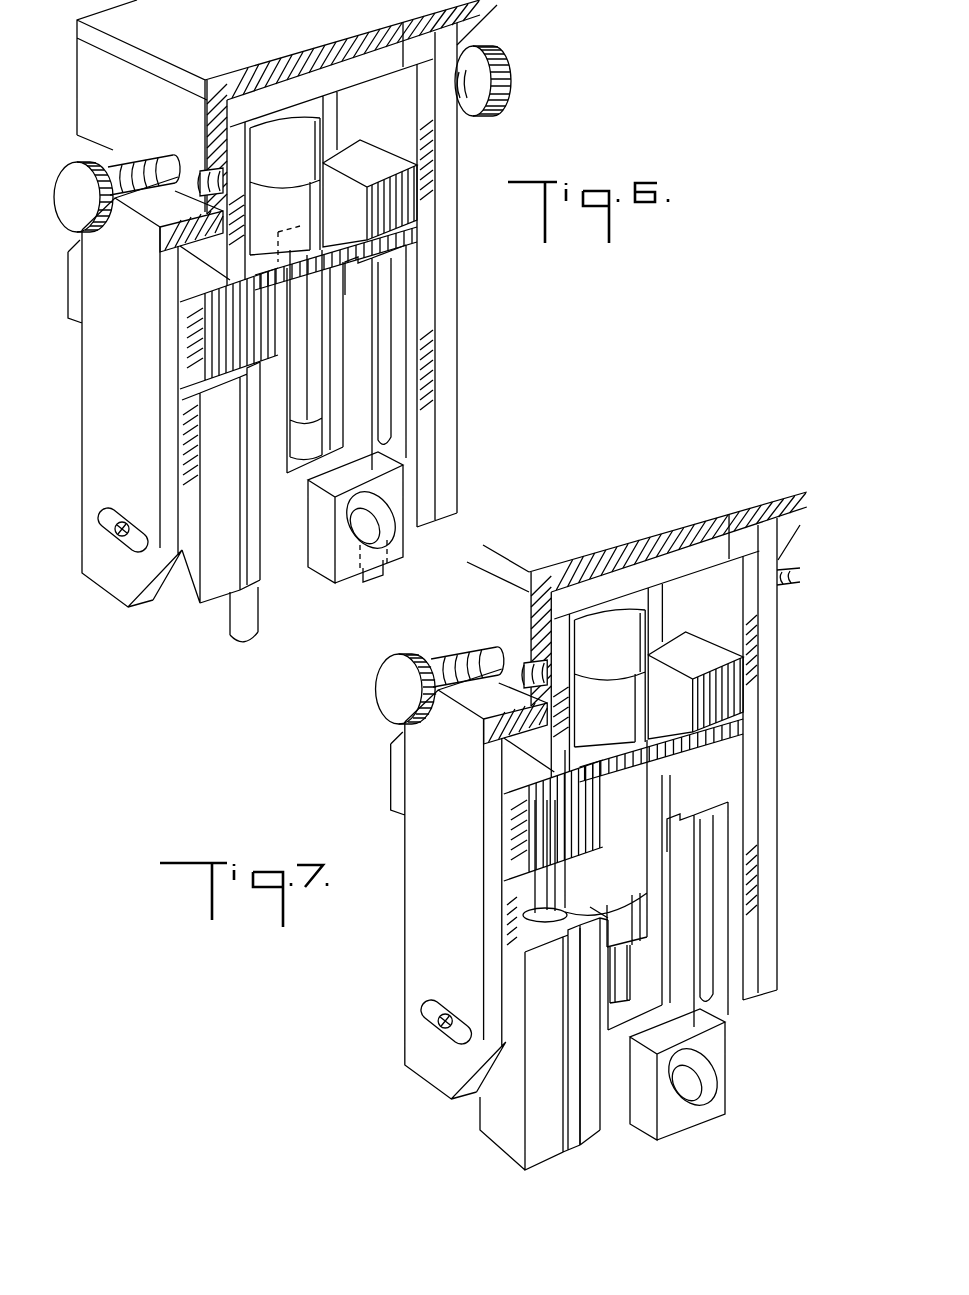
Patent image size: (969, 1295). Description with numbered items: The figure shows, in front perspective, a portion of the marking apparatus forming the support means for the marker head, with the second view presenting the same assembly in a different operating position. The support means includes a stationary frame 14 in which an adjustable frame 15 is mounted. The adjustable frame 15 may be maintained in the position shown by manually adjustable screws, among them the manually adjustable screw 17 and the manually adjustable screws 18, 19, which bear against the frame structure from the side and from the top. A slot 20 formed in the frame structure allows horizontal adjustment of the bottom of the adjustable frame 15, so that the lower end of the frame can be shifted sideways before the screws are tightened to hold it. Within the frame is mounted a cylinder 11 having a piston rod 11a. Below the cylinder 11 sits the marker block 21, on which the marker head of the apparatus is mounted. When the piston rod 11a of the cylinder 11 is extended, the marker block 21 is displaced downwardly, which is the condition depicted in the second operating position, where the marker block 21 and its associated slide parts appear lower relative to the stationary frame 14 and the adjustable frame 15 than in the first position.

In FIG. 6, the cylinder 11 is at (350, 192).
In FIG. 7, the cylinder 11 is at (695, 705).
In FIG. 7, the piston rod 11a is at (615, 982).
In FIG. 6, the stationary frame 14 is at (458, 232).
In FIG. 6, the adjustable frame 15 is at (430, 405).
In FIG. 6, the manually adjustable screw 17 is at (100, 528).
In FIG. 6, the manually adjustable screw 18 is at (505, 112).
In FIG. 6, the manually adjustable screw 19 is at (66, 193).
In FIG. 7, the manually adjustable screw 19 is at (411, 685).
In FIG. 6, the slot 20 is at (106, 508).
In FIG. 6, the marker block 21 is at (285, 580).
In FIG. 7, the marker block 21 is at (662, 990).